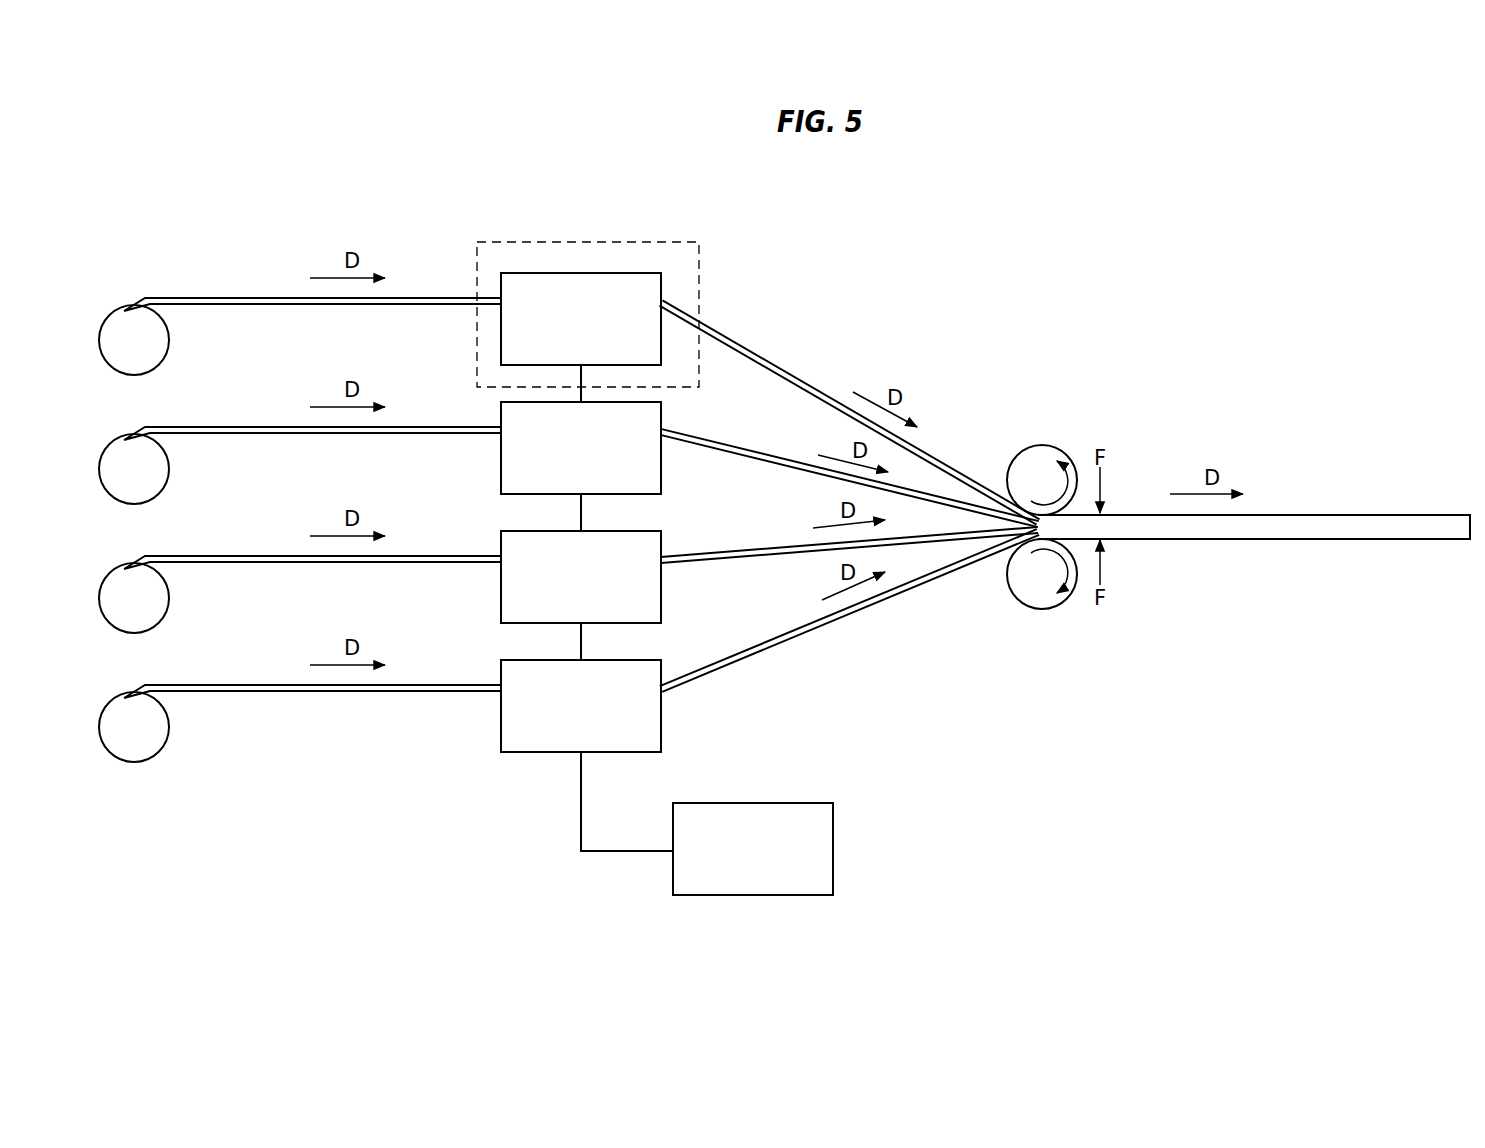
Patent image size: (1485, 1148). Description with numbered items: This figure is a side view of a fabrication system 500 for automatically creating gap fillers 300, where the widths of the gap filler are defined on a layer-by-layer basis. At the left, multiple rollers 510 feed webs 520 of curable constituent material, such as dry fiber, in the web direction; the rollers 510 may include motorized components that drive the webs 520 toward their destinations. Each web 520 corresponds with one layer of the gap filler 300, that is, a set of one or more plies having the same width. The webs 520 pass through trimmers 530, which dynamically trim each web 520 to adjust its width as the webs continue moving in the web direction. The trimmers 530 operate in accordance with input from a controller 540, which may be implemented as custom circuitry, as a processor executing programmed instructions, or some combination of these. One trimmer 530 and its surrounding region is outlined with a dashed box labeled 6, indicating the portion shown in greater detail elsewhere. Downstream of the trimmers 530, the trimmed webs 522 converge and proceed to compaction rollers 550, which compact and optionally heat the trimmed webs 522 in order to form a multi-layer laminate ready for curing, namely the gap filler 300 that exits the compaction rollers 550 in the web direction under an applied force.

The fabrication system 500 is at (1180, 250).
The rollers 510 is at (168, 355).
The webs 520 is at (252, 296).
The trimmed webs 522 is at (783, 368).
The trimmers 530 is at (581, 512).
The controller 540 is at (707, 823).
The compaction rollers 550 is at (1050, 445).
The gap filler 300 is at (1405, 515).
The detail region of FIG. 6 is at (699, 275).